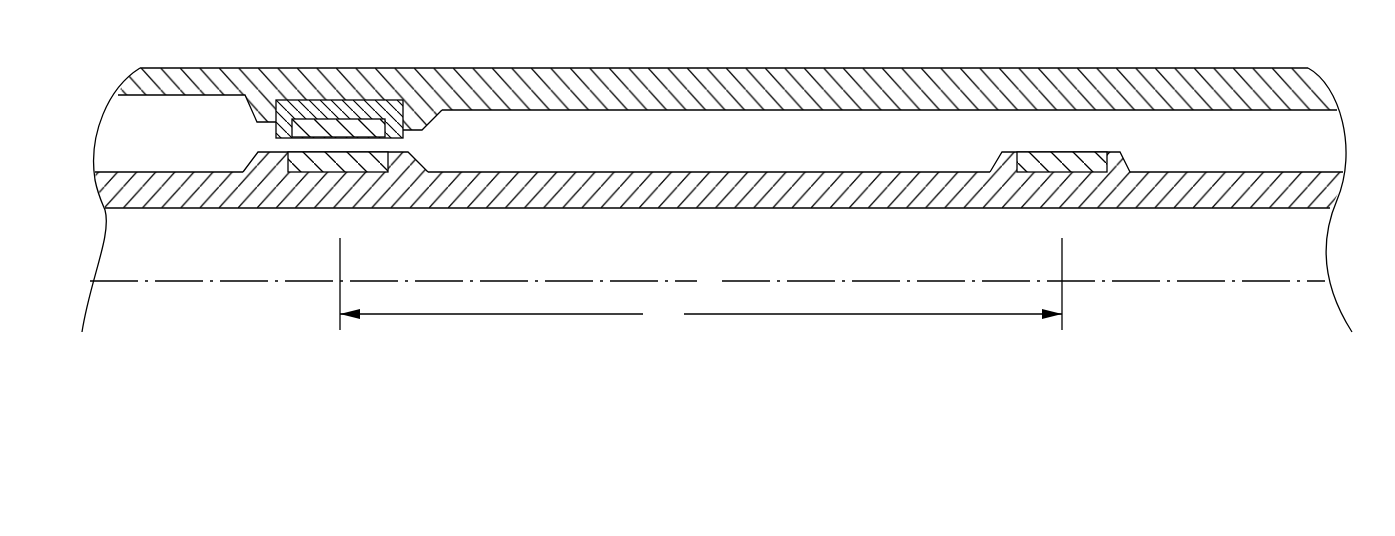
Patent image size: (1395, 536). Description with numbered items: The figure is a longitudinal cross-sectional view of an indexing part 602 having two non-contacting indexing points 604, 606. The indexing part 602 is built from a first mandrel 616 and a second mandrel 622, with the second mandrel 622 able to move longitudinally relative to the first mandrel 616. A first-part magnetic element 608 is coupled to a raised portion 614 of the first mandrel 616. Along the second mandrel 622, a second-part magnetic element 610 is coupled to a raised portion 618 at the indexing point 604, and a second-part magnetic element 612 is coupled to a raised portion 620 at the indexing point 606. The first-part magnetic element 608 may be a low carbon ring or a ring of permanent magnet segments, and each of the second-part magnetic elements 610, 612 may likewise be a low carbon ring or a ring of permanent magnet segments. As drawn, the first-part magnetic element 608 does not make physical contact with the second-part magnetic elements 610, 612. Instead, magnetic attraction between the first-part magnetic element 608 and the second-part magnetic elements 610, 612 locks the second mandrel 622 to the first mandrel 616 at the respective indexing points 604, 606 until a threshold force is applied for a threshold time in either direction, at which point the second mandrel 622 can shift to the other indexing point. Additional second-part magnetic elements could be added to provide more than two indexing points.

The indexing part 602 is at (880, 40).
The indexing point 604 is at (338, 296).
The indexing point 606 is at (912, 296).
The first-part magnetic element 608 is at (338, 128).
The second-part magnetic element 610 is at (310, 164).
The second-part magnetic element 612 is at (1072, 164).
The raised portion 614 is at (426, 118).
The first mandrel 616 is at (472, 68).
The raised portion 618 is at (250, 164).
The raised portion 620 is at (997, 167).
The second mandrel 622 is at (434, 208).